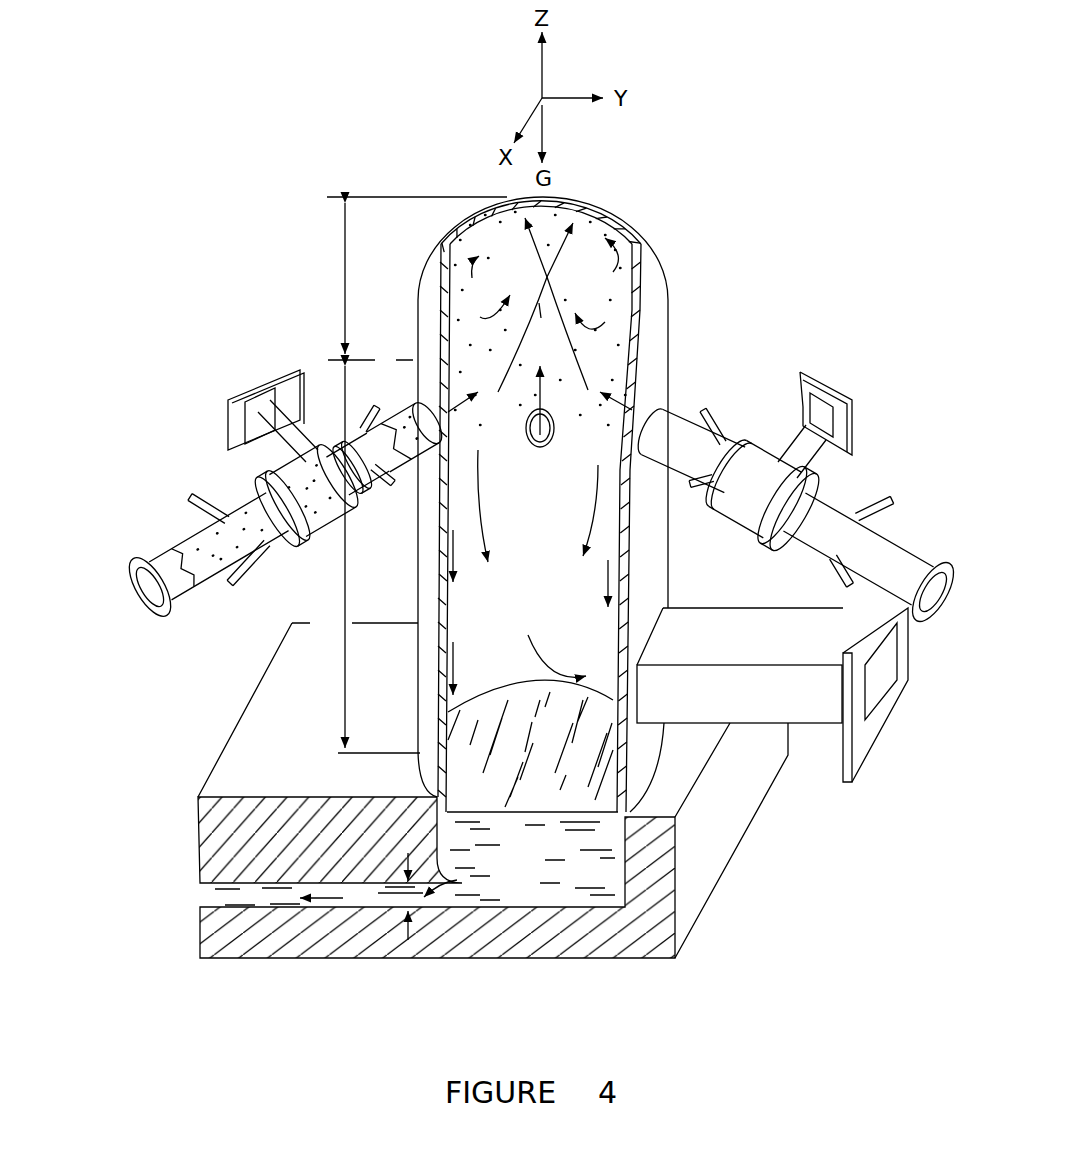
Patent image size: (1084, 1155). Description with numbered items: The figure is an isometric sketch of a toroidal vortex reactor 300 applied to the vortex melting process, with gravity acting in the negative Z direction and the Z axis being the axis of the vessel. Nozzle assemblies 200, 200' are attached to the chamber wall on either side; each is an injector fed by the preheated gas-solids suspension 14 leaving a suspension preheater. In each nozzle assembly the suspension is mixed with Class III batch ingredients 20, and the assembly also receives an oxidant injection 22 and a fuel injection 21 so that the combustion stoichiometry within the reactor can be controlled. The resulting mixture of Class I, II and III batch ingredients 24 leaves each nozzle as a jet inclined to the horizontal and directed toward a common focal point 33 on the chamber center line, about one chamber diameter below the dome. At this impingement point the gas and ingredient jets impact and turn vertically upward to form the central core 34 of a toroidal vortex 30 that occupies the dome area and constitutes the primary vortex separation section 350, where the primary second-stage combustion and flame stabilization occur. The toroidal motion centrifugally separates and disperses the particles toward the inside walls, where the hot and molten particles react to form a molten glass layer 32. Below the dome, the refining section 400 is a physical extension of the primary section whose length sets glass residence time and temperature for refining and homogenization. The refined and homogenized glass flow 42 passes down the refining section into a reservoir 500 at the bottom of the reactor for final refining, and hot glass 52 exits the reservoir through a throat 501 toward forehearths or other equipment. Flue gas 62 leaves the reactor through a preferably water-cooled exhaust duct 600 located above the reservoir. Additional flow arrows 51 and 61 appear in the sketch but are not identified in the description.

The vortex reactor 300 is at (651, 245).
The nozzle assembly 200 is at (284, 500).
The nozzle assembly 200' is at (799, 502).
The gas-solids suspension 14 is at (125, 592).
The fuel injection 21 is at (178, 490).
The Class III batch ingredients 20 is at (381, 398).
The oxidant injection 22 is at (246, 378).
The mixture of Class I, II and III batch ingredients 24 is at (540, 394).
The toroidal vortex 30 is at (545, 265).
The molten glass layer 32 is at (526, 316).
The common focal point 33 is at (540, 375).
The central core 34 is at (543, 305).
The refined and homogenized glass flow 42 is at (450, 757).
The downward flow 61 is at (569, 656).
The flue gas 62 is at (880, 658).
The reservoir 500 is at (436, 790).
The throat 501 is at (406, 881).
The return flow 51 is at (451, 879).
The hot glass 52 is at (361, 899).
The exhaust duct 600 is at (740, 783).
The primary vortex separation section 350 is at (411, 278).
The refining section 400 is at (368, 559).